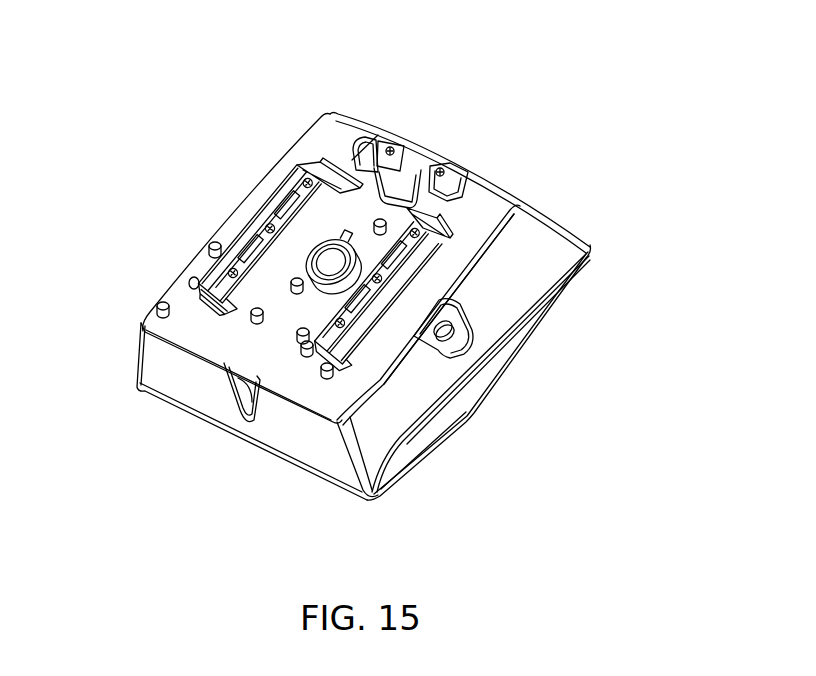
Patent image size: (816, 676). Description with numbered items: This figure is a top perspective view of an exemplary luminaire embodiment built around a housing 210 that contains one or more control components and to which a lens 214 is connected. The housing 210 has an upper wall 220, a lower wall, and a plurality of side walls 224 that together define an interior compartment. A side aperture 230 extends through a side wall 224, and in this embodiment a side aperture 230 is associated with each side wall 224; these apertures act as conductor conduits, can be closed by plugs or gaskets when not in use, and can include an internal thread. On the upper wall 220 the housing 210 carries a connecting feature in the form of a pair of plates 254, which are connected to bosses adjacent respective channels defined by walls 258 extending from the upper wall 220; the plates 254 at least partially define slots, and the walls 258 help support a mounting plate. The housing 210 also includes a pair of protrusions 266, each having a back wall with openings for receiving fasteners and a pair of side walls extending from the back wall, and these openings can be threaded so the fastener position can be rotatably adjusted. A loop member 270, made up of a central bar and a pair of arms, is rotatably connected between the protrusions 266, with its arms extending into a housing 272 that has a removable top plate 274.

The housing 210 is at (400, 437).
The lens 214 is at (466, 421).
The upper wall 220 is at (218, 345).
The side wall 224 is at (537, 270).
The side aperture 230 is at (450, 337).
The plate 254 is at (277, 222).
The wall 258 is at (213, 297).
The protrusion 266 is at (371, 136).
The loop member 270 is at (392, 197).
The housing 272 is at (401, 148).
The removable top plate 274 is at (460, 183).